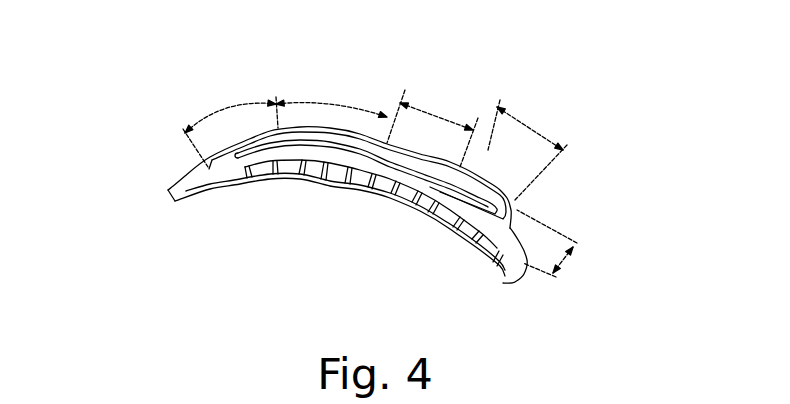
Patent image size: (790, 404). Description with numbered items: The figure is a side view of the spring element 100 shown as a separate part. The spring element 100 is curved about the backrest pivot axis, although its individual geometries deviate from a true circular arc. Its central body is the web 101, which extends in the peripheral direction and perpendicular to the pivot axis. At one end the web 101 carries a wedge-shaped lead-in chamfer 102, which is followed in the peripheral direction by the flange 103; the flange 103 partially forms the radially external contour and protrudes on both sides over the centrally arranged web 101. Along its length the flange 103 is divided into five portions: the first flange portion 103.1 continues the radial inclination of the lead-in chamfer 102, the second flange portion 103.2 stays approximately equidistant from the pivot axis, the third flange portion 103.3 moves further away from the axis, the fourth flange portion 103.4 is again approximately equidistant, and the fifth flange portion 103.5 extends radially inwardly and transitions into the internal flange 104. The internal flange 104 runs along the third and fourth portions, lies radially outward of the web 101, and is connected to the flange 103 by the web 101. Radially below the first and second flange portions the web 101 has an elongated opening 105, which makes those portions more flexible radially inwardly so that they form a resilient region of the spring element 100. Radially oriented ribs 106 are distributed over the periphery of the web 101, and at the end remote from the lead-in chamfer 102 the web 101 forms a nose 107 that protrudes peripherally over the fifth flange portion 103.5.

The spring element 100 is at (185, 175).
The web 101 is at (470, 200).
The lead-in chamfer 102 is at (170, 190).
The flange 103 is at (205, 124).
The first flange portion 103.1 is at (235, 108).
The second flange portion 103.2 is at (307, 102).
The third flange portion 103.3 is at (433, 110).
The fourth flange portion 103.4 is at (520, 118).
The fifth flange portion 103.5 is at (568, 258).
The internal flange 104 is at (433, 220).
The elongated opening 105 is at (306, 178).
The ribs 106 is at (268, 182).
The nose 107 is at (520, 278).